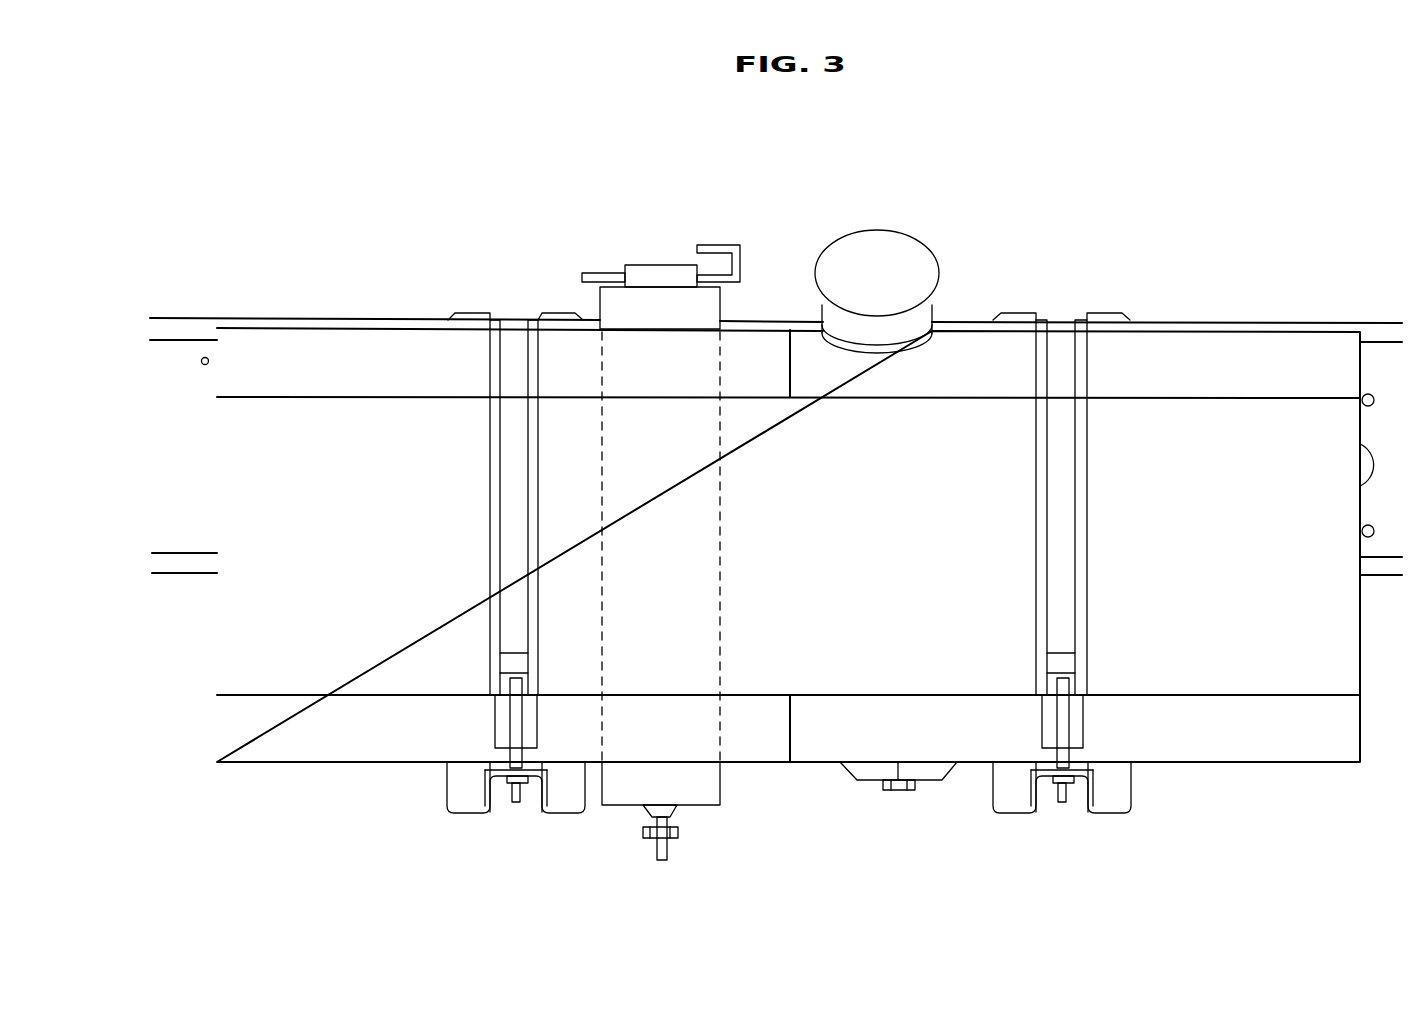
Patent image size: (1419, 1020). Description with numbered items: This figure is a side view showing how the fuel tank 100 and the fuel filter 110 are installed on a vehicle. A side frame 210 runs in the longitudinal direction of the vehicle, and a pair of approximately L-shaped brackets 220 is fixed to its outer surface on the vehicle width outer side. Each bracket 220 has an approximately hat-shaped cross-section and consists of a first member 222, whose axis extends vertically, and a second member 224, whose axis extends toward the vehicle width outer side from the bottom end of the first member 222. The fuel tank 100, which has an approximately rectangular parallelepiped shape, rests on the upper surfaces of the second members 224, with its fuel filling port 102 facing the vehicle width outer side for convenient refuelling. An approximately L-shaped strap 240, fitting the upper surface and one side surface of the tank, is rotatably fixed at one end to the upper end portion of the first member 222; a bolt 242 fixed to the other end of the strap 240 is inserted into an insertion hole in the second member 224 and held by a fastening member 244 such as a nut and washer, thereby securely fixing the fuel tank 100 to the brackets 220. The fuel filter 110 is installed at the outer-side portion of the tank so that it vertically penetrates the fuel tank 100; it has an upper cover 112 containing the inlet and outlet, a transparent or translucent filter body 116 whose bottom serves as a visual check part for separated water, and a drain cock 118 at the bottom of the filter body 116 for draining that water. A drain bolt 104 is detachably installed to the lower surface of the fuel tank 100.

The fuel tank 100 is at (214, 640).
The fuel filling port 102 is at (878, 237).
The drain bolt 104 is at (892, 793).
The fuel filter 110 is at (658, 251).
The upper cover 112 is at (635, 266).
The filter body 116 is at (722, 777).
The drain cock 118 is at (678, 830).
The side frame 210 is at (177, 317).
The bracket 220 is at (464, 306).
The first member 222 is at (552, 311).
The second member 224 is at (447, 812).
The strap 240 is at (484, 492).
The bolt 242 is at (495, 717).
The fastening member 244 is at (503, 797).